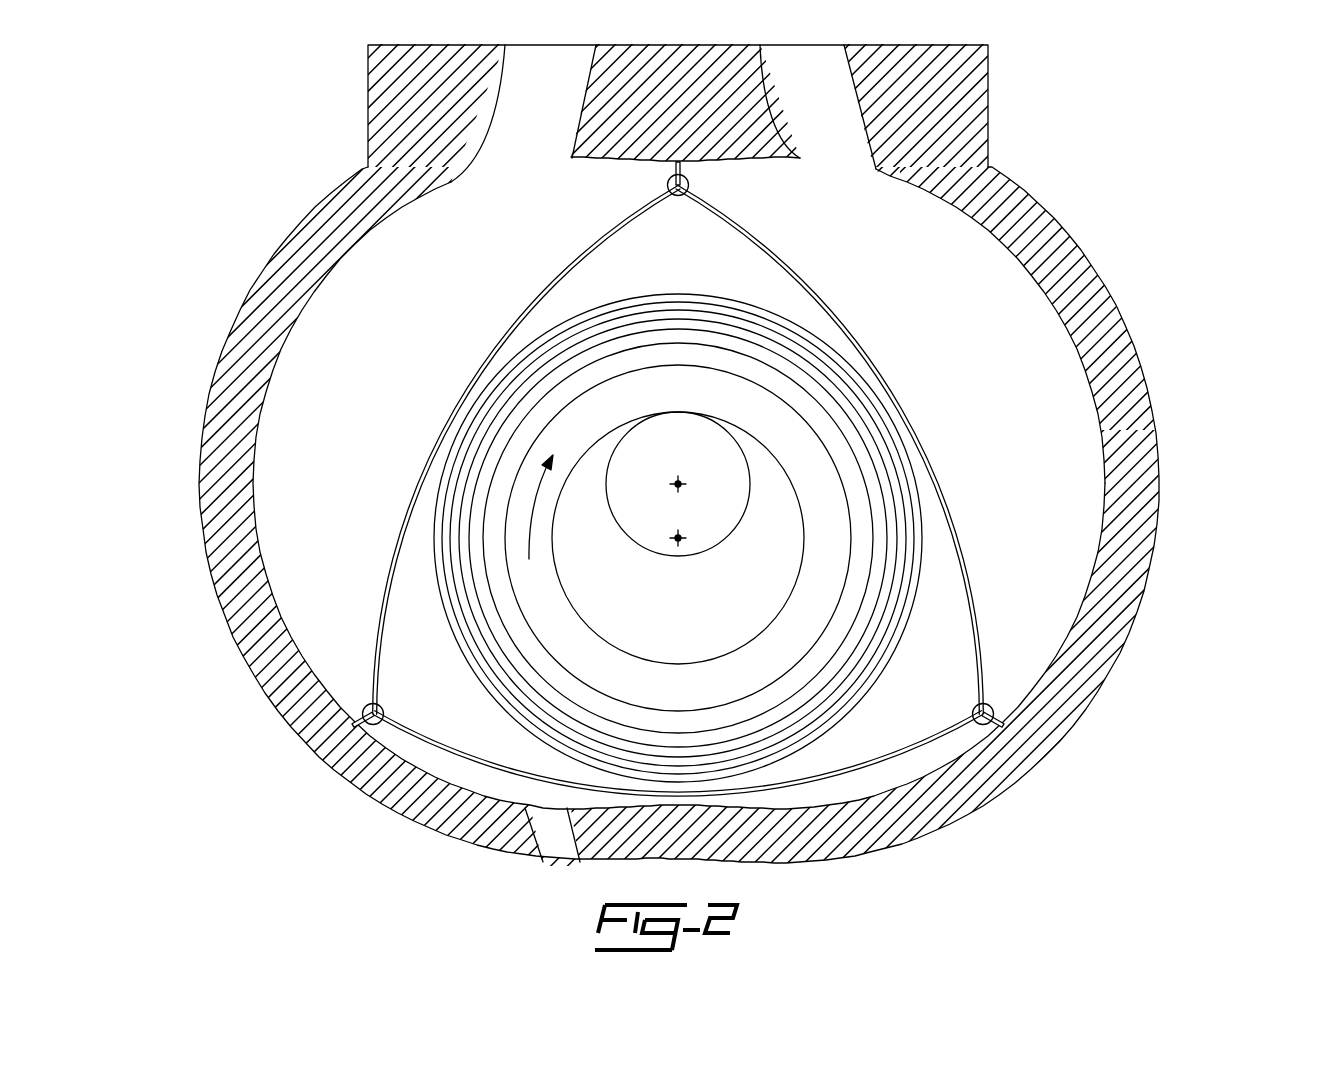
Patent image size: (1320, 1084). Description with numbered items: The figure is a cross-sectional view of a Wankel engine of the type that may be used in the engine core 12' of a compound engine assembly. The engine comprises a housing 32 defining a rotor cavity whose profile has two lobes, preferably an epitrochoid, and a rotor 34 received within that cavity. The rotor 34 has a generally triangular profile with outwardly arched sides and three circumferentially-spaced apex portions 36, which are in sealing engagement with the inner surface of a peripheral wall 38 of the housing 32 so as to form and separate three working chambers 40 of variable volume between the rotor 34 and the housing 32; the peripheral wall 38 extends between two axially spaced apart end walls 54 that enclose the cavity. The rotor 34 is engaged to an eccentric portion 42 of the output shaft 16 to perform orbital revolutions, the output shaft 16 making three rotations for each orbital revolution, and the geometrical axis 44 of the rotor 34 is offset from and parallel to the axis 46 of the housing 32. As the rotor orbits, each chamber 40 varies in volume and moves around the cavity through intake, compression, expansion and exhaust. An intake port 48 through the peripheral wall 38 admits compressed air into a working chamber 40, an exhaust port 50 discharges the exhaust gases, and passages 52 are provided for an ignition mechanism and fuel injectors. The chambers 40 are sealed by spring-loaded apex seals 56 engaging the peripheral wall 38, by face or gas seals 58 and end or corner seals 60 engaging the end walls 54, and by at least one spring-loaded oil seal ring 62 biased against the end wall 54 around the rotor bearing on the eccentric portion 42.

The engine core 12' is at (660, 473).
The housing 32 is at (1063, 223).
The peripheral wall 38 is at (1110, 347).
The end walls 54 is at (1064, 550).
The exhaust port 50 is at (539, 126).
The intake port 48 is at (817, 127).
The passages 52 is at (475, 826).
The working chambers 40 is at (338, 391).
The rotor 34 is at (797, 531).
The apex portions 36 is at (1007, 730).
The oil seal ring 62 is at (808, 707).
The eccentric portion 42 is at (674, 623).
The output shaft 16 is at (708, 521).
The axis of the housing 46 is at (677, 484).
The geometrical axis of the rotor 44 is at (677, 539).
The face or gas seals 58 is at (384, 607).
The end or corner seals 60 is at (362, 710).
The apex seals 56 is at (355, 718).